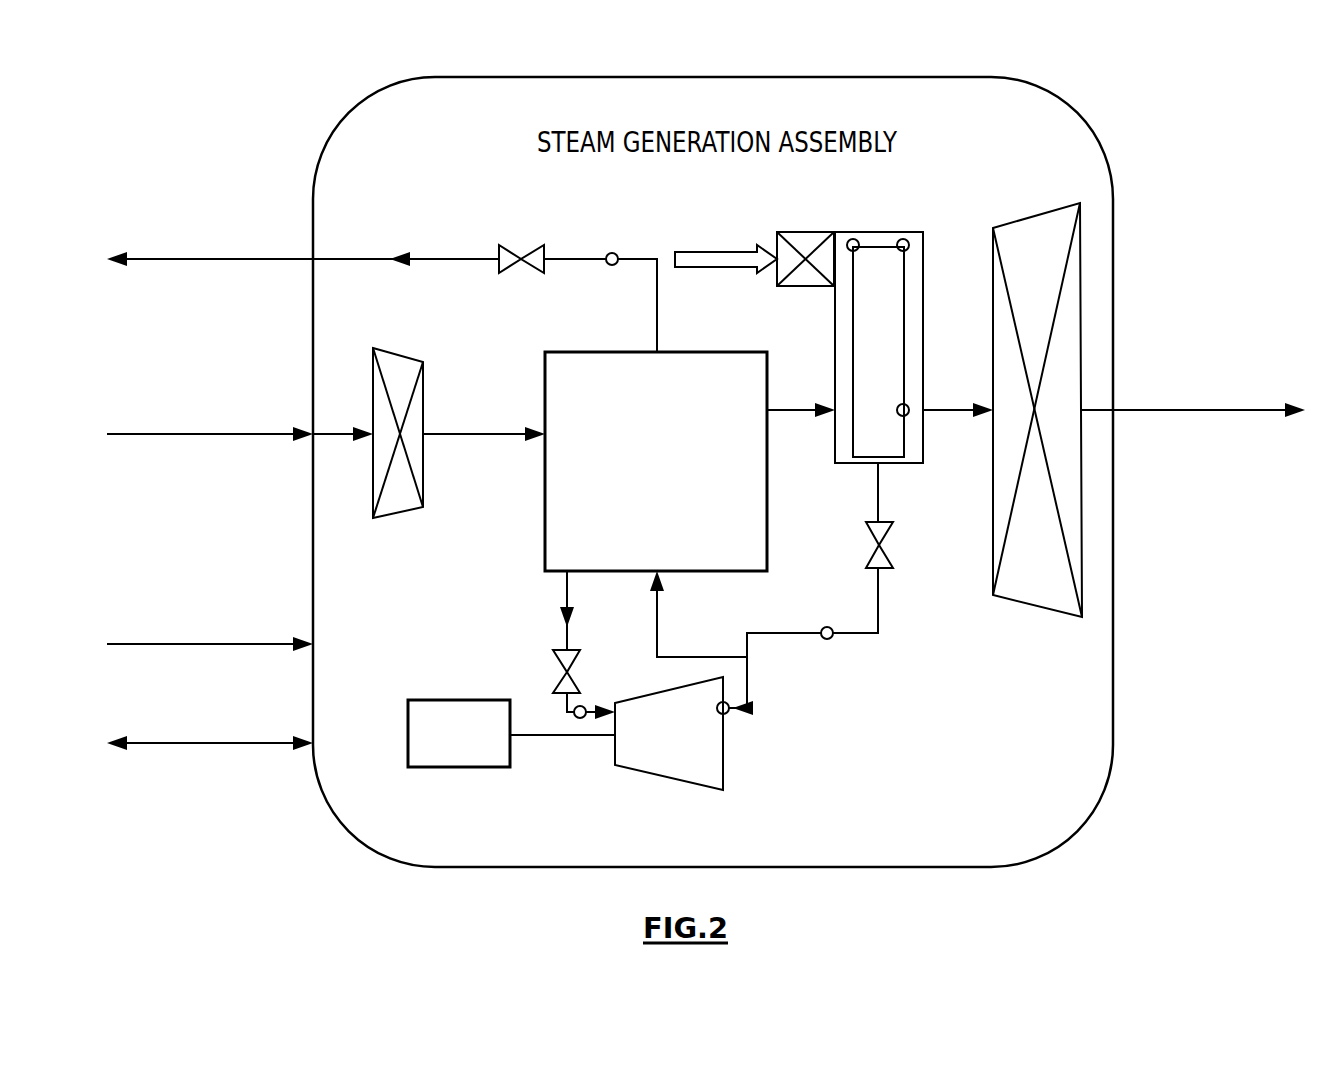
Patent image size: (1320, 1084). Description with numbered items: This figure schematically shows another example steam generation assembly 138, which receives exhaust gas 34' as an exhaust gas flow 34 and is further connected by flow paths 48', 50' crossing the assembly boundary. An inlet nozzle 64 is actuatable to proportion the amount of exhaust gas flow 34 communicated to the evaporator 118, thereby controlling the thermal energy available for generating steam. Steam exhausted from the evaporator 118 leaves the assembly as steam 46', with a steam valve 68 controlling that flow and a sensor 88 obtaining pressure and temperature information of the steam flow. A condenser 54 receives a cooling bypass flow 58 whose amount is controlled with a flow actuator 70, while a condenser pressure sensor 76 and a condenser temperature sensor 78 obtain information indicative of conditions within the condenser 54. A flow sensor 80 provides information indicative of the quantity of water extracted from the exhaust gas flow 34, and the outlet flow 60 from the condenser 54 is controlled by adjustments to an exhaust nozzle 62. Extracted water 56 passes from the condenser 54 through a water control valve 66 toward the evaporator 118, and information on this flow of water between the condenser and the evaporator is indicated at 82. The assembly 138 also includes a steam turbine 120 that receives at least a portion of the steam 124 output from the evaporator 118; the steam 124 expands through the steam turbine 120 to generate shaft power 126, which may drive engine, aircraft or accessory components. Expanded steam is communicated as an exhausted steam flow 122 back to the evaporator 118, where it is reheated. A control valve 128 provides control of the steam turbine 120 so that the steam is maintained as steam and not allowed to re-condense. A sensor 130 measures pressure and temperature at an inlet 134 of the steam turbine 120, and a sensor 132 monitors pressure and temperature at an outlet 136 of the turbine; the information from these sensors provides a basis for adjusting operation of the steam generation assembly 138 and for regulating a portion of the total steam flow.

The steam generation assembly 138 is at (1185, 80).
The steam outlet 46' is at (298, 233).
The steam valve 68 is at (530, 274).
The sensor 88 is at (612, 267).
The cooling bypass flow 58 is at (706, 252).
The flow actuator 70 is at (808, 240).
The condenser 54 is at (880, 247).
The condenser pressure sensor 76 is at (851, 239).
The condenser temperature sensor 78 is at (909, 243).
The flow sensor 80 is at (909, 409).
The outlet flow 60 is at (945, 415).
The exhaust nozzle 62 is at (1043, 597).
The water control valve 66 is at (870, 548).
The extracted water 56 is at (882, 634).
The water flow indication 82 is at (828, 626).
The outlet of the steam turbine 136 is at (752, 700).
The evaporator 118 is at (565, 535).
The exhaust gas inlet 34' is at (240, 419).
The inlet nozzle 64 is at (398, 500).
The exhaust gas flow 34 is at (484, 405).
The inlet line 48' is at (210, 629).
The bidirectional line 50' is at (210, 728).
The steam 124 is at (565, 592).
The control valve 128 is at (556, 656).
The sensor 130 is at (584, 705).
The exhausted steam flow 122 is at (660, 608).
The steam turbine 120 is at (684, 775).
The sensor 132 is at (728, 713).
The inlet of the steam turbine 134 is at (612, 718).
The shaft power 126 is at (452, 768).